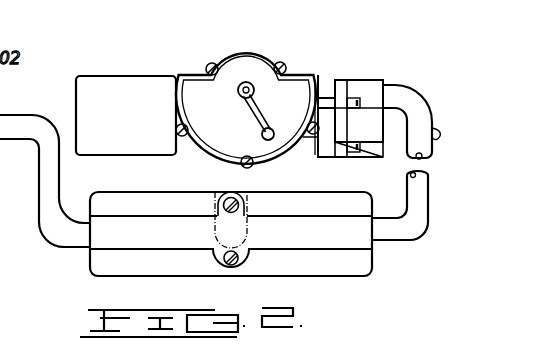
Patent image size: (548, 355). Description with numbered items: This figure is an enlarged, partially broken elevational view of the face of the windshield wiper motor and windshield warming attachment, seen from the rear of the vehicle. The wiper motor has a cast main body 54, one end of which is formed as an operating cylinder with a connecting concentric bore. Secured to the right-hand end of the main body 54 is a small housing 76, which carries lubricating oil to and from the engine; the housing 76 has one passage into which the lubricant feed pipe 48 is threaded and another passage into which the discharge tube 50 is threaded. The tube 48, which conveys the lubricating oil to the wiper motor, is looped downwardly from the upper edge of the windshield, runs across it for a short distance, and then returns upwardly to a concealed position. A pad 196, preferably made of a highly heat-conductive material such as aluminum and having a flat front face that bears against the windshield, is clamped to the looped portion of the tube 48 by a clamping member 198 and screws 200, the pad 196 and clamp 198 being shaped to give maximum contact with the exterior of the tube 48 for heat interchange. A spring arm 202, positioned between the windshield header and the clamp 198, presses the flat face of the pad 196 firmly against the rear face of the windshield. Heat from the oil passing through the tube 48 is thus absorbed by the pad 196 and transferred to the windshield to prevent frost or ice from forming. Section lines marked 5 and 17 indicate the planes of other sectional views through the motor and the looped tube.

The section line 5- 5 is at (222, 37).
The section line 17- 17 is at (133, 178).
The lubricant feed pipe 48 is at (43, 200).
The discharge tube 50 is at (436, 128).
The main body 54 is at (326, 88).
The housing 76 is at (360, 80).
The pad 196 is at (103, 268).
The clamping member 198 is at (317, 237).
The screws 200 is at (237, 270).
The spring arm 202 is at (249, 197).